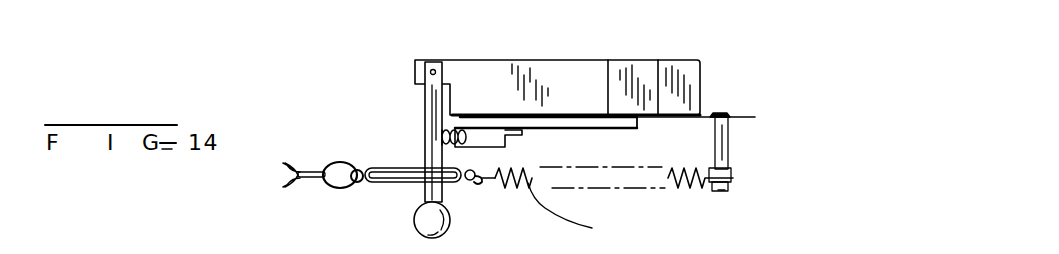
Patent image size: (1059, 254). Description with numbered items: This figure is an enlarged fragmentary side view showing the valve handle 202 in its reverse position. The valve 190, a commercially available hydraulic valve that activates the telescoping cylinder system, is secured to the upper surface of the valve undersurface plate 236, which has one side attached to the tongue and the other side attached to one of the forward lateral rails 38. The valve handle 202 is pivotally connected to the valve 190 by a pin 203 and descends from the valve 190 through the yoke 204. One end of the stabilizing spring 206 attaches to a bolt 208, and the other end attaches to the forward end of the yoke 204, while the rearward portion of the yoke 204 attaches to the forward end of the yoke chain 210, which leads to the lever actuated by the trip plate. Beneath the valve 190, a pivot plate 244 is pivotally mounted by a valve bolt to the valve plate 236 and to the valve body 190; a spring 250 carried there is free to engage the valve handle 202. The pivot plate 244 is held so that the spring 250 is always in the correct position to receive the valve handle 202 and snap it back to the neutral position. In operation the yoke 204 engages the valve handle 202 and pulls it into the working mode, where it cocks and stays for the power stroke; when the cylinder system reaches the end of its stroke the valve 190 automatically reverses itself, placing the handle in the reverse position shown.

The lateral rail 38 is at (738, 118).
The valve 190 is at (600, 35).
The valve handle 202 is at (450, 225).
The pin 203 is at (435, 62).
The yoke 204 is at (400, 167).
The stabilizing spring 206 is at (599, 205).
The bolt 208 is at (728, 162).
The yoke chain 210 is at (315, 168).
The valve undersurface plate 236 is at (620, 127).
The pivot plate 244 is at (522, 134).
The spring 250 is at (455, 128).